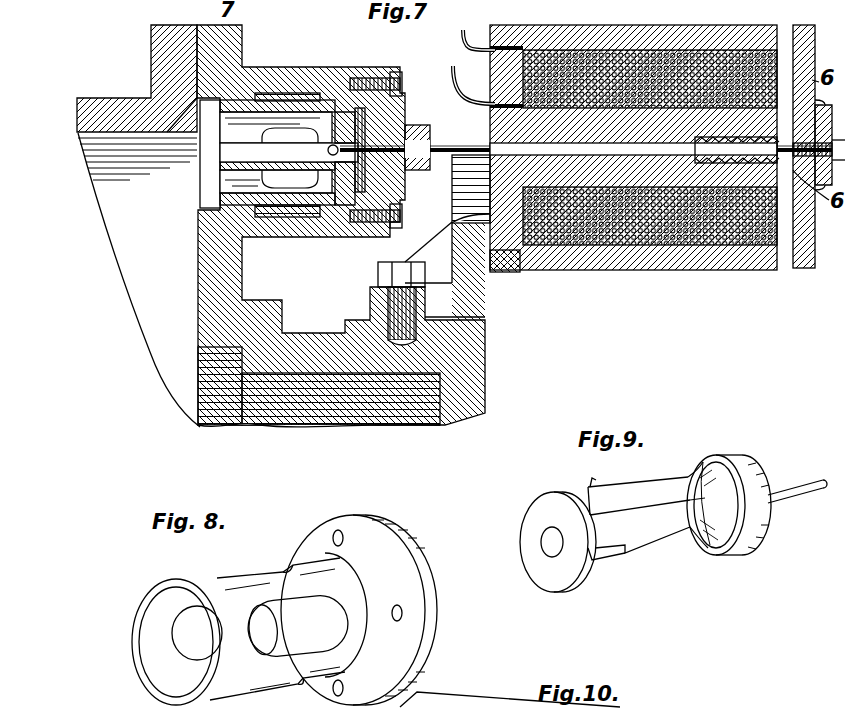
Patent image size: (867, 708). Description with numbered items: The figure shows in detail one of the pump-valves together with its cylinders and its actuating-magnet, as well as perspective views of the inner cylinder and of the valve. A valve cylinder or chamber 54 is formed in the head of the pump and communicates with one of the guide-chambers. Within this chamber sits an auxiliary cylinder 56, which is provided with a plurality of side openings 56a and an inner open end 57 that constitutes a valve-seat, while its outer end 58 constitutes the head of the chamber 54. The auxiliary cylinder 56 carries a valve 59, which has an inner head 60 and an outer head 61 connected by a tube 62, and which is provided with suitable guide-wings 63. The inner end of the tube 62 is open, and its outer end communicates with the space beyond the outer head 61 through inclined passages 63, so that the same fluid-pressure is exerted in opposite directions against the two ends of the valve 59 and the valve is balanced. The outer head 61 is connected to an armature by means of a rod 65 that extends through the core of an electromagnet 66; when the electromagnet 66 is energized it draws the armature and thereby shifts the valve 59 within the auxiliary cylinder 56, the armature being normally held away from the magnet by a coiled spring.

In FIG. 7, the valve cylinder or chamber 54 is at (305, 67).
In FIG. 7, the auxiliary cylinder 56 is at (360, 78).
In FIG. 8, the auxiliary cylinder 56 is at (288, 626).
In FIG. 7, the side openings 56a is at (298, 215).
In FIG. 8, the side openings 56a is at (272, 690).
In FIG. 8, the inner open end 57 is at (143, 668).
In FIG. 8, the outer end 58 is at (426, 598).
In FIG. 9, the valve 59 is at (688, 521).
In FIG. 7, the inner head 60 is at (212, 180).
In FIG. 9, the inner head 60 is at (558, 542).
In FIG. 7, the outer head 61 is at (345, 225).
In FIG. 9, the outer head 61 is at (757, 486).
In FIG. 7, the tube 62 is at (289, 155).
In FIG. 9, the tube 62 is at (639, 515).
In FIG. 7, the guide-wings 63 is at (370, 114).
In FIG. 9, the guide-wings 63 is at (592, 485).
In FIG. 7, the rod 65 is at (439, 146).
In FIG. 7, the electromagnet 66 is at (615, 138).